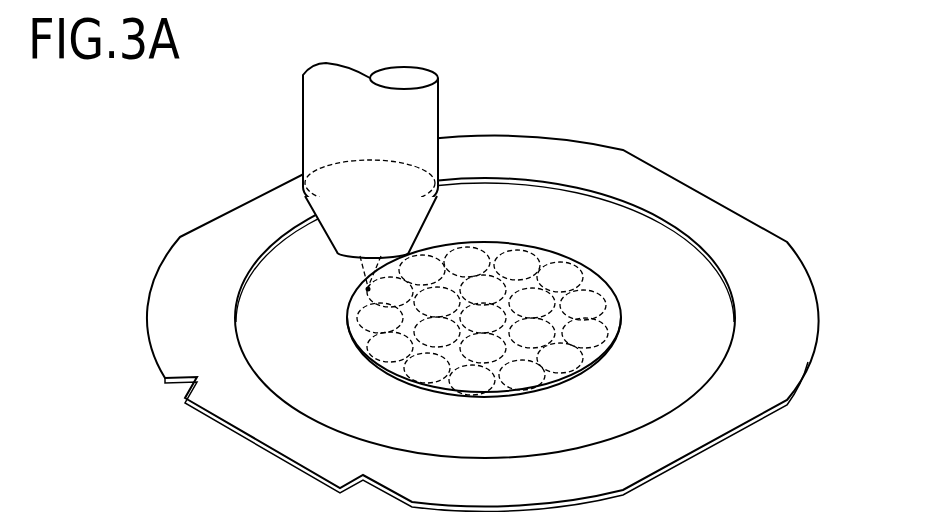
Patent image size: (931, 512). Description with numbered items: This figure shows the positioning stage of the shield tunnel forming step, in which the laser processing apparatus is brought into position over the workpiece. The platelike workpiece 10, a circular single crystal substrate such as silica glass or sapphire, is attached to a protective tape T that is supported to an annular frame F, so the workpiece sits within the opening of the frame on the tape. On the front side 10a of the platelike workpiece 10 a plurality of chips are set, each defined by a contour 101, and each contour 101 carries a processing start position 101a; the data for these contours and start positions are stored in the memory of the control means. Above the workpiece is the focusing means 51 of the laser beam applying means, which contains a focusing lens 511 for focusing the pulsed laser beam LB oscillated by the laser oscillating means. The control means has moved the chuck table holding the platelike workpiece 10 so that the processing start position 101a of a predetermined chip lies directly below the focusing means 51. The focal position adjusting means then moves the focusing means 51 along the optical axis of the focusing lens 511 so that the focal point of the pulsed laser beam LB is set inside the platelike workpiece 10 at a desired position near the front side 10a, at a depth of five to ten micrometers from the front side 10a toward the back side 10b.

The annular frame F is at (763, 270).
The protective tape T is at (253, 300).
The platelike workpiece 10 is at (458, 329).
The front side 10a is at (545, 261).
The back side 10b is at (523, 400).
The contour 101 is at (364, 302).
The processing start position 101a is at (364, 289).
The focusing means 51 is at (369, 160).
The focusing lens 511 is at (342, 160).
The pulsed laser beam LB is at (368, 277).